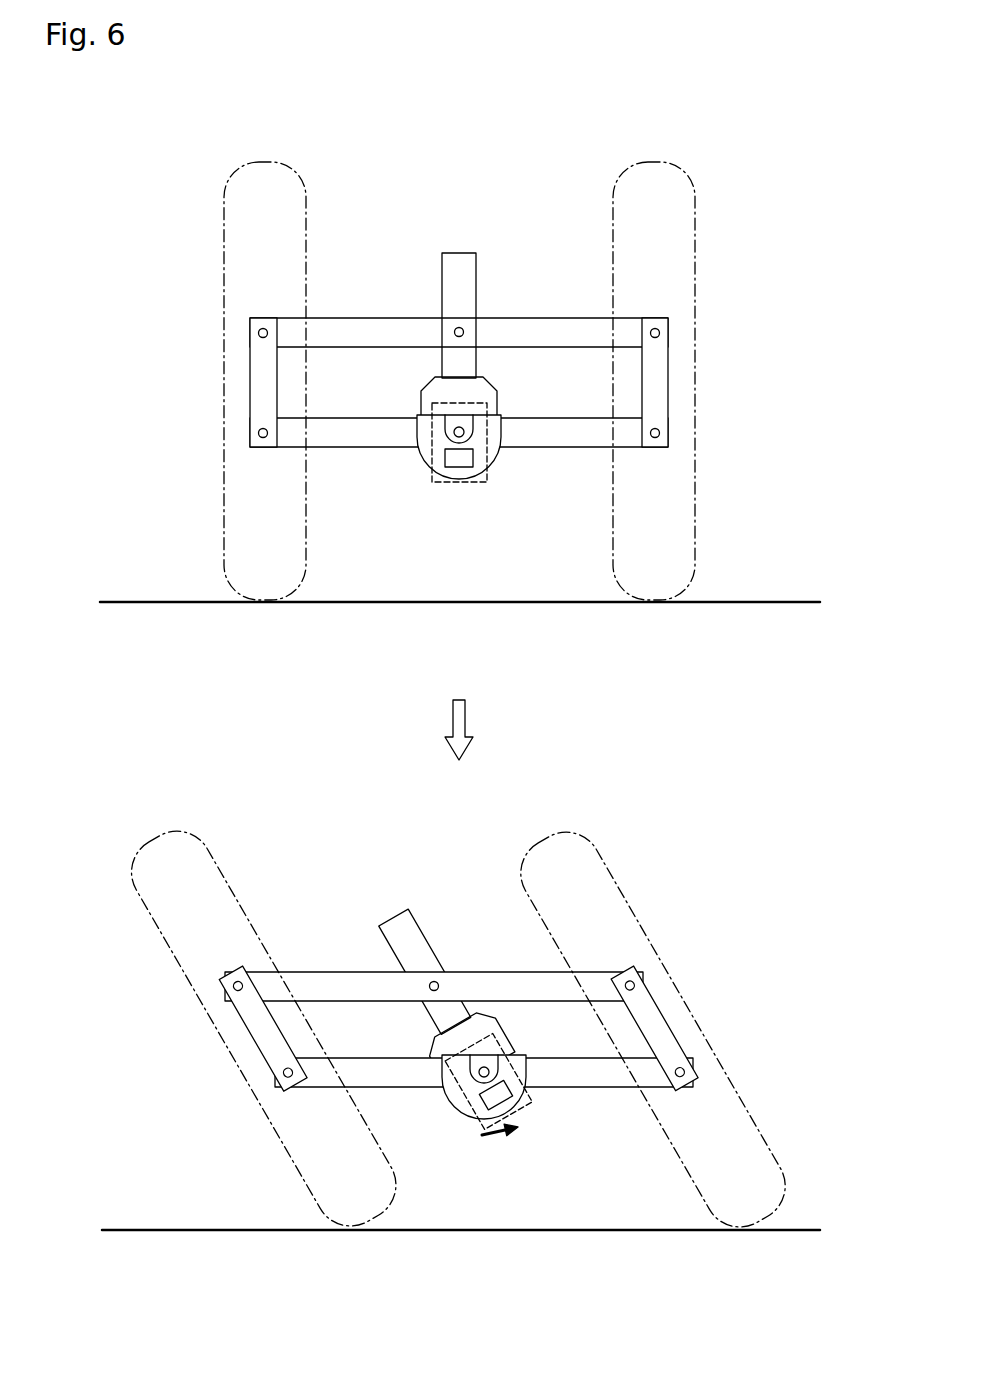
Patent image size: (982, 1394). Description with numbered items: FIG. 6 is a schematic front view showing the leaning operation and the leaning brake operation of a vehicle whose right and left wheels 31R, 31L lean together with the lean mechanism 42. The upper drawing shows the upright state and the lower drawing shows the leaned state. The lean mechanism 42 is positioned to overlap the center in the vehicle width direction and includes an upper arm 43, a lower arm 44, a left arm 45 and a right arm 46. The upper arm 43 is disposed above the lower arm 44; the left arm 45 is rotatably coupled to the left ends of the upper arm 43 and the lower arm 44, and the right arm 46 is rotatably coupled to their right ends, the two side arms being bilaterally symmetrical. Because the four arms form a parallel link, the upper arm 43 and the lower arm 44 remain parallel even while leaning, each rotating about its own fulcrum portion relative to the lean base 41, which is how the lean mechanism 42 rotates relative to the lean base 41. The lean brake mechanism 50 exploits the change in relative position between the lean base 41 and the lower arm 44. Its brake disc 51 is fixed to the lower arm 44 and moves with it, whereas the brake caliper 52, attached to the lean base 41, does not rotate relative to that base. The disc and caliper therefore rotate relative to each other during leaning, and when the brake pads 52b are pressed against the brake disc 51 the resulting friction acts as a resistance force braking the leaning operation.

The right wheel 31R is at (224, 221).
The left wheel 31L is at (695, 220).
The lean base 41 is at (433, 372).
The lean mechanism 42 is at (365, 250).
The upper arm 43 is at (532, 326).
The lower arm 44 is at (531, 449).
The left arm 45 is at (655, 384).
The right arm 46 is at (263, 383).
The lean brake mechanism 50 is at (476, 818).
The brake disc 51 is at (417, 431).
The brake caliper 52 is at (478, 470).
The brake pads 52b is at (454, 462).